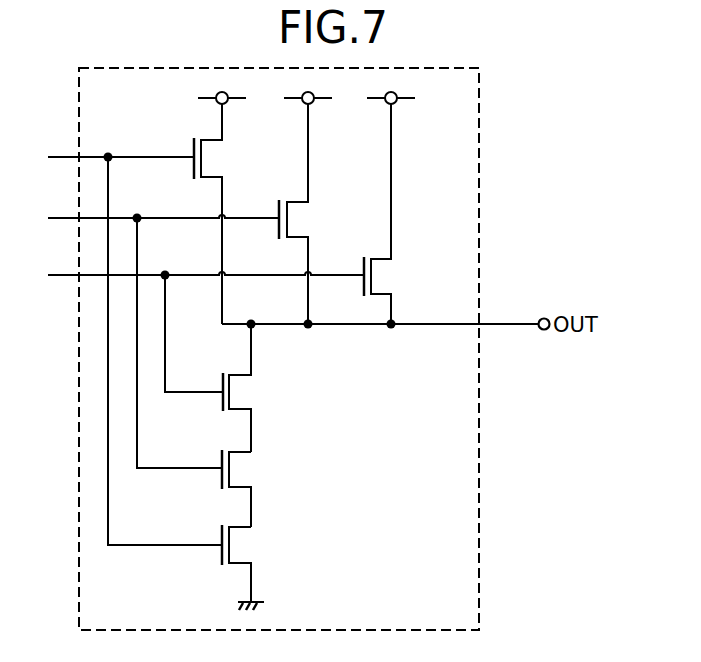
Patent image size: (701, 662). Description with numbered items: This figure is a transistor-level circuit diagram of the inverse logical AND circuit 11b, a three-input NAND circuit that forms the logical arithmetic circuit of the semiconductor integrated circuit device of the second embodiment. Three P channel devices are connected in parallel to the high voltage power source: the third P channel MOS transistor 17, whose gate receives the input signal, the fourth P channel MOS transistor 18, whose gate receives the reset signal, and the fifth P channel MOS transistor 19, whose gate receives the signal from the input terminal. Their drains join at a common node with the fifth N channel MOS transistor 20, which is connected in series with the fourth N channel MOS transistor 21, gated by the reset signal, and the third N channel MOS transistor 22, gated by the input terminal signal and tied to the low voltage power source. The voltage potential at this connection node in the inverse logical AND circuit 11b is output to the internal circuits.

The inverse logical AND circuit 11b is at (480, 106).
The third P channel MOS transistor 17 is at (215, 159).
The fourth P channel MOS transistor 18 is at (304, 217).
The fifth P channel MOS transistor 19 is at (389, 273).
The fifth N channel MOS transistor 20 is at (249, 393).
The fourth N channel MOS transistor 21 is at (250, 470).
The third N channel MOS transistor 22 is at (250, 546).